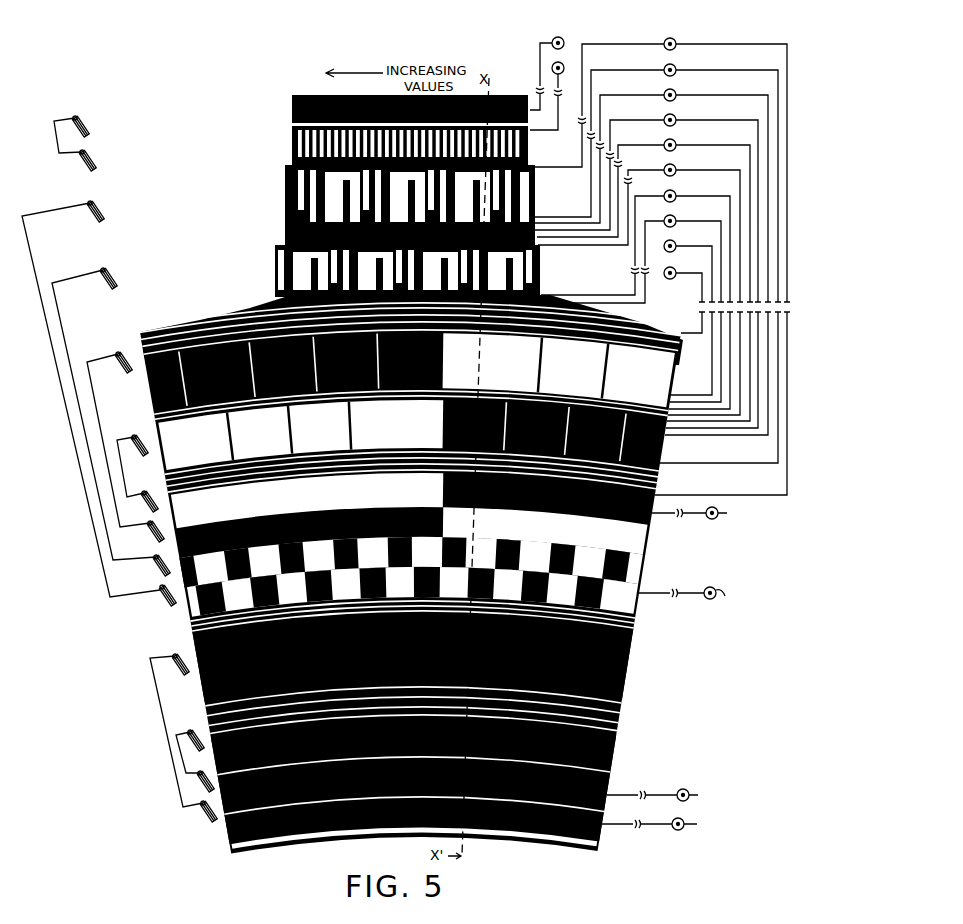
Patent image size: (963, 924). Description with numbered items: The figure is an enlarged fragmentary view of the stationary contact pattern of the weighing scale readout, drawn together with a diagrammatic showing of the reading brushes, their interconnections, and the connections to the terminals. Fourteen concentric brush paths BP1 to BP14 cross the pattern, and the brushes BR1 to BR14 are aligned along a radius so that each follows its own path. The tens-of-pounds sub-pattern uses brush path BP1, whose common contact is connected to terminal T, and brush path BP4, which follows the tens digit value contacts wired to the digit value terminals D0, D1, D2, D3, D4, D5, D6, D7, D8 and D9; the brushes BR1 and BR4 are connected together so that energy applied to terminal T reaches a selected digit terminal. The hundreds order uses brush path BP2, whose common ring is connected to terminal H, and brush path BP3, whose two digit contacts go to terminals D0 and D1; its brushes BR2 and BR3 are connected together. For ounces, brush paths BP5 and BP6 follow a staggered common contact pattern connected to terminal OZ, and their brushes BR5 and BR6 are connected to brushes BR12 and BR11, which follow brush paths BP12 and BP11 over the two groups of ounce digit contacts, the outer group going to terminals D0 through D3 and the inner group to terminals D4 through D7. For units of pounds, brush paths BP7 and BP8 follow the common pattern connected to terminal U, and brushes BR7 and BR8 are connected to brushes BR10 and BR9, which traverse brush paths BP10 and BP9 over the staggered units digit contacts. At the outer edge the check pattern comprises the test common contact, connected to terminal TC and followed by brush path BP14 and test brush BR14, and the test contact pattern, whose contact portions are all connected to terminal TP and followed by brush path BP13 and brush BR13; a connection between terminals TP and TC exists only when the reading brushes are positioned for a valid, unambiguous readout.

The brush path BP1 is at (224, 828).
The brush path BP2 is at (210, 793).
The brush path BP3 is at (200, 752).
The brush path BP4 is at (192, 672).
The brush path BP5 is at (180, 607).
The brush path BP6 is at (172, 578).
The brush path BP7 is at (178, 547).
The brush path BP8 is at (157, 513).
The brush path BP9 is at (200, 446).
The brush path BP10 is at (141, 372).
The brush path BP11 is at (98, 292).
The brush path BP12 is at (86, 222).
The brush path BP13 is at (78, 172).
The brush path BP14 is at (70, 138).
The reading brush BR1 is at (205, 818).
The reading brush BR2 is at (200, 773).
The reading brush BR3 is at (190, 732).
The reading brush BR4 is at (175, 656).
The reading brush BR5 is at (162, 587).
The reading brush BR6 is at (156, 557).
The reading brush BR7 is at (150, 523).
The reading brush BR8 is at (143, 492).
The reading brush BR9 is at (127, 456).
The reading brush BR10 is at (118, 429).
The reading brush BR11 is at (104, 401).
The reading brush BR12 is at (91, 387).
The test brush BR13 is at (107, 154).
The test brush BR14 is at (90, 126).
The digit value terminal D0 is at (675, 40).
The digit value terminal D1 is at (676, 66).
The digit value terminal D2 is at (676, 91).
The digit value terminal D3 is at (676, 116).
The digit value terminal D4 is at (676, 141).
The digit value terminal D5 is at (676, 166).
The digit value terminal D6 is at (676, 192).
The digit value terminal D7 is at (676, 217).
The digit value terminal D8 is at (676, 242).
The digit value terminal D9 is at (676, 269).
The test common terminal TC is at (558, 64).
The test pattern terminal TP is at (552, 68).
The units terminal U is at (696, 516).
The ounces terminal OZ is at (691, 599).
The hundreds terminal H is at (659, 798).
The tens terminal T is at (656, 827).